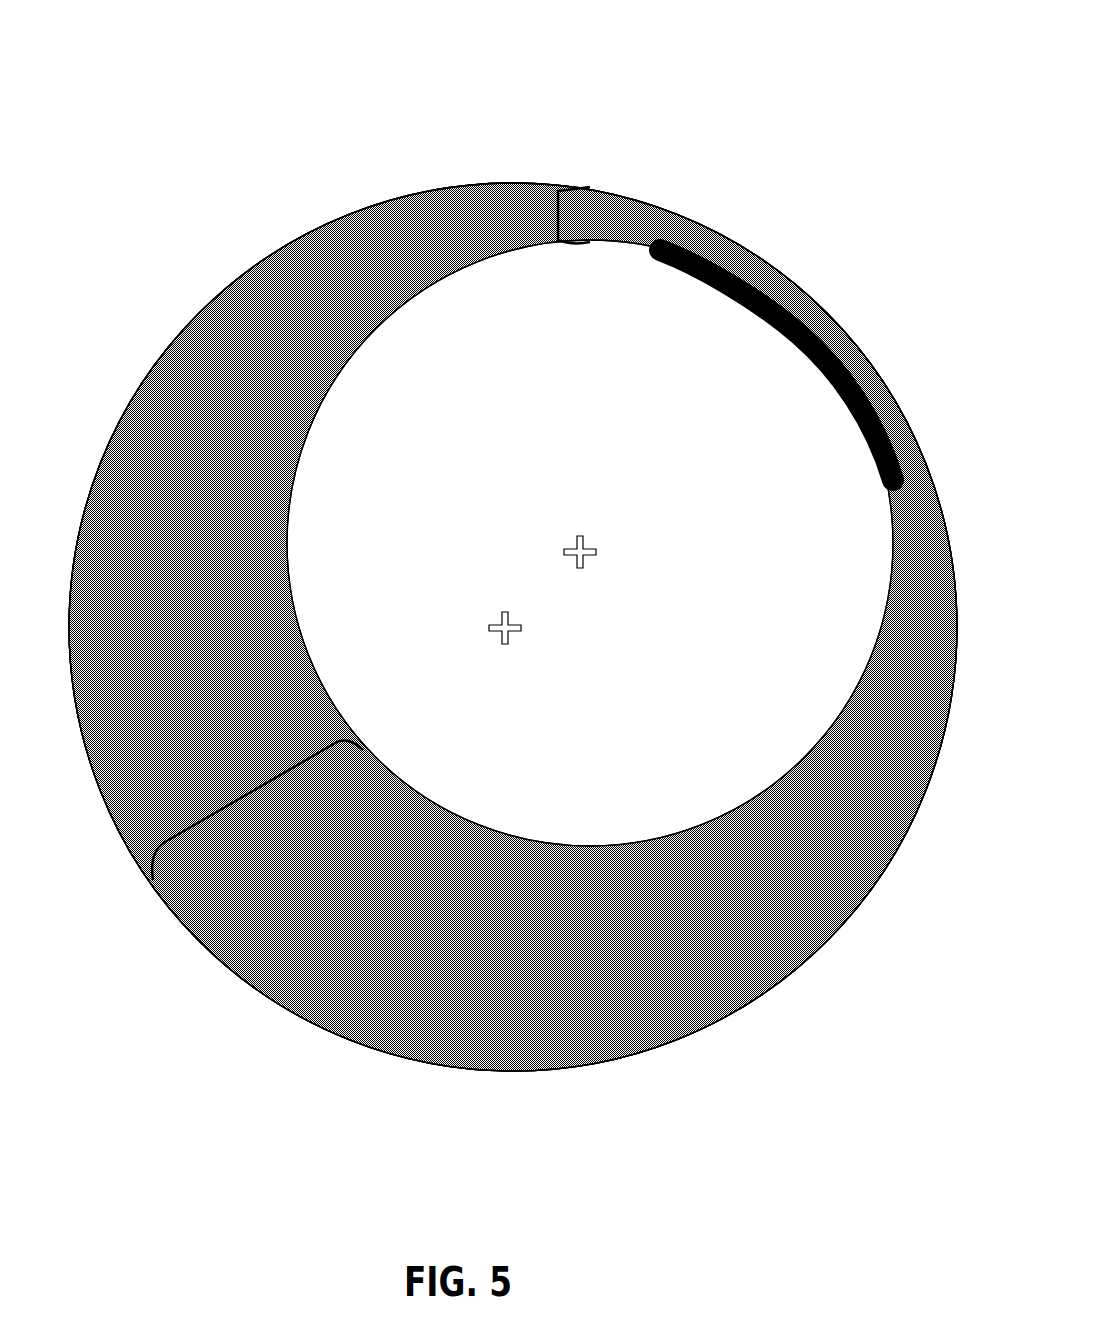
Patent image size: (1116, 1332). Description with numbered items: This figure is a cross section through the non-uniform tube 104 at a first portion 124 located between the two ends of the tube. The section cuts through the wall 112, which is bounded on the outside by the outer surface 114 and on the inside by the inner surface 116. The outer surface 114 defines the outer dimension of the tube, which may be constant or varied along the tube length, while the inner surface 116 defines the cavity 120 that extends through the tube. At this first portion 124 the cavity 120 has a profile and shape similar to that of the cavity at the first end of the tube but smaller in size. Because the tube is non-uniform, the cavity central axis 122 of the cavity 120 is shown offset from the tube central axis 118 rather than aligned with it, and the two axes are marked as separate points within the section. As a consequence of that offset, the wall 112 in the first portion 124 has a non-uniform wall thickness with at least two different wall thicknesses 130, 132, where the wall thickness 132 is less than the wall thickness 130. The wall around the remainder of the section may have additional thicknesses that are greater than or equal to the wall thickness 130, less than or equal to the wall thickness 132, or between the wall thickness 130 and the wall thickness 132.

The non-uniform tube 104 is at (106, 94).
The wall 112 is at (343, 260).
The outer surface 114 is at (434, 183).
The inner surface 116 is at (376, 347).
The tube central axis 118 is at (507, 626).
The cavity 120 is at (748, 383).
The cavity central axis 122 is at (580, 548).
The first portion 124 is at (679, 183).
The wall thickness 130 is at (252, 792).
The wall thickness 132 is at (556, 216).